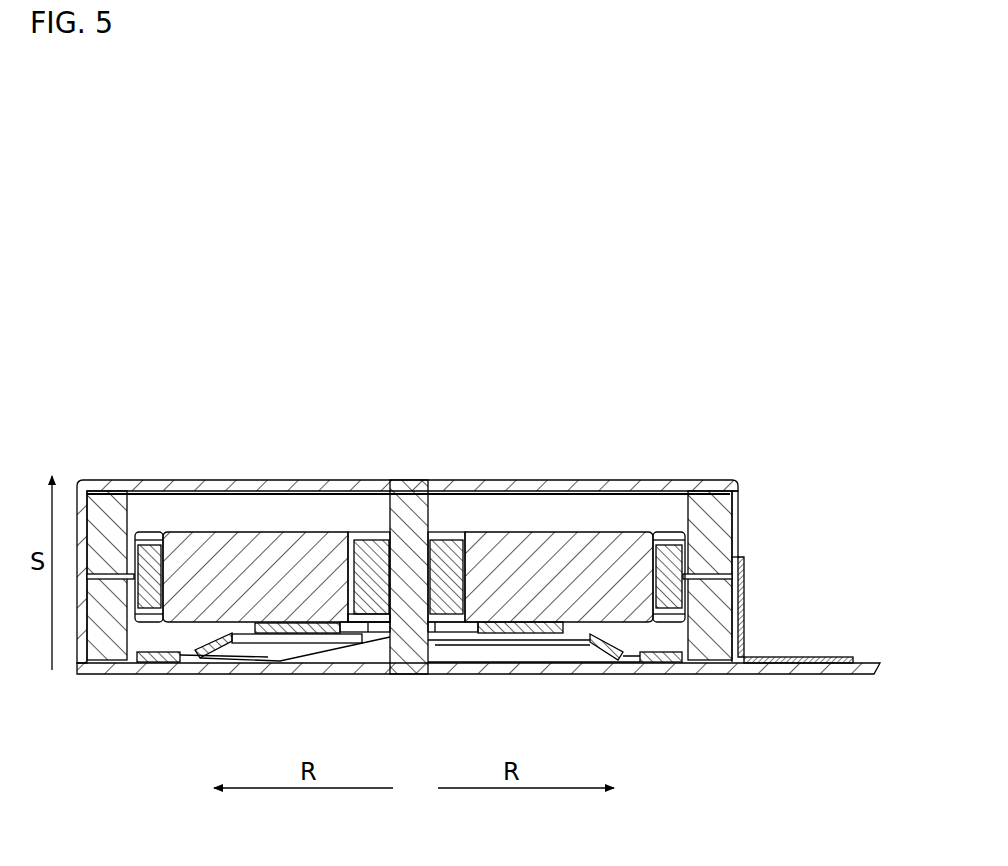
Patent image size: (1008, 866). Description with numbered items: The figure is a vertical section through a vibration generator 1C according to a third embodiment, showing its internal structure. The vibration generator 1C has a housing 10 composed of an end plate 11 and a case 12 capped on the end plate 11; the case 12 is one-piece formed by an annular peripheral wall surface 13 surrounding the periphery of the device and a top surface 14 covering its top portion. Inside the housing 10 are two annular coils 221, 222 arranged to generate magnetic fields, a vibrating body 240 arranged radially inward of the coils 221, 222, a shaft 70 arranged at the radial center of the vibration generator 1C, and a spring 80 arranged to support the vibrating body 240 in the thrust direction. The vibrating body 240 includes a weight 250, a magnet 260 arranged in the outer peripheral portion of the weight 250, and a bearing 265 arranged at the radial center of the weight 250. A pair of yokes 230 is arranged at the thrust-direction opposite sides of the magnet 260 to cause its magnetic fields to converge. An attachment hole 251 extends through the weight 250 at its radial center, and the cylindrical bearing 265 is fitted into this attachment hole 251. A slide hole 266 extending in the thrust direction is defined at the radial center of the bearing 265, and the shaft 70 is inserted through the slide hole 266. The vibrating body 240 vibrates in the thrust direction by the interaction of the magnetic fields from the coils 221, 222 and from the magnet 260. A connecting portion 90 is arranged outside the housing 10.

The vibration generator 1C is at (443, 358).
The housing 10 is at (600, 476).
The end plate 11 is at (135, 676).
The case 12 is at (542, 476).
The annular peripheral wall surface 13 is at (742, 487).
The top surface 14 is at (467, 478).
The shaft 70 is at (418, 478).
The spring 80 is at (565, 640).
The connecting portion 90 is at (787, 654).
The coil 221 is at (725, 527).
The coil 222 is at (713, 658).
The yoke 230 is at (668, 530).
The vibrating body 240 is at (233, 524).
The weight 250 is at (288, 532).
The attachment hole 251 is at (458, 577).
The magnet 260 is at (677, 557).
The bearing 265 is at (375, 534).
The slide hole 266 is at (392, 580).